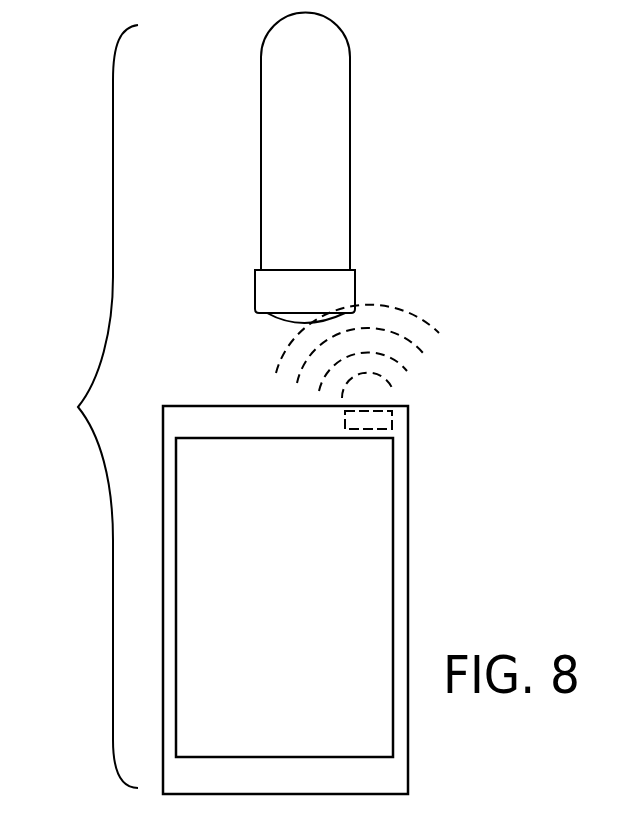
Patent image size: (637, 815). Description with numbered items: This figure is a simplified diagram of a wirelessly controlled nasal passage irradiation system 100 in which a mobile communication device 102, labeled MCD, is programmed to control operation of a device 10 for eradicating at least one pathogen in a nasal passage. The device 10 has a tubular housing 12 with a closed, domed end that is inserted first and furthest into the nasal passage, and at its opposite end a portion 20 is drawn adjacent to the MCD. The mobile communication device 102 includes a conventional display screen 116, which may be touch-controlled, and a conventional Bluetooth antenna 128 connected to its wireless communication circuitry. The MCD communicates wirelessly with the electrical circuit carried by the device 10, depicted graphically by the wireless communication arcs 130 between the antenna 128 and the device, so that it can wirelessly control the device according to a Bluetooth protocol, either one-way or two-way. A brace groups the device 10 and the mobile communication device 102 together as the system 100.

The device 10 is at (414, 168).
The tubular housing 12 is at (350, 146).
The base portion 20 is at (357, 283).
The wirelessly controlled nasal passage irradiation system 100 is at (85, 406).
The mobile communication device 102 is at (408, 477).
The display screen 116 is at (393, 540).
The Bluetooth antenna 128 is at (392, 420).
The wireless communication arcs 130 is at (385, 334).